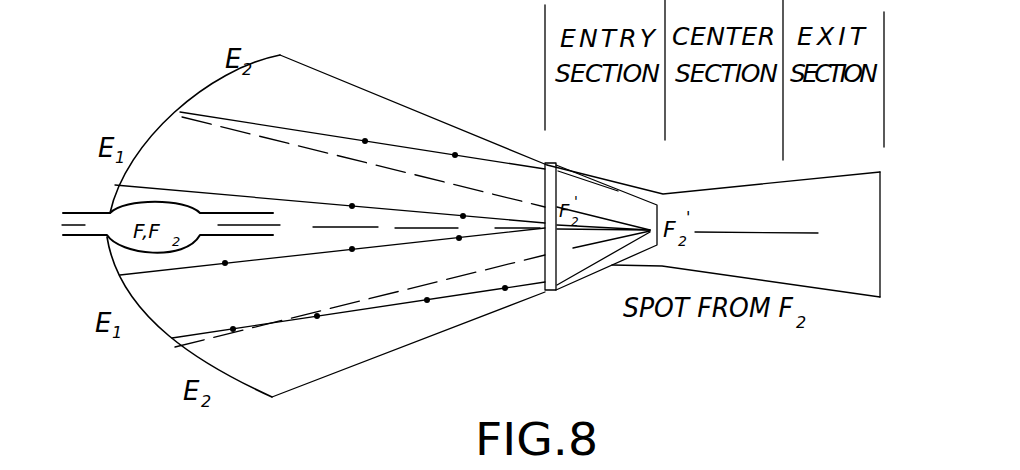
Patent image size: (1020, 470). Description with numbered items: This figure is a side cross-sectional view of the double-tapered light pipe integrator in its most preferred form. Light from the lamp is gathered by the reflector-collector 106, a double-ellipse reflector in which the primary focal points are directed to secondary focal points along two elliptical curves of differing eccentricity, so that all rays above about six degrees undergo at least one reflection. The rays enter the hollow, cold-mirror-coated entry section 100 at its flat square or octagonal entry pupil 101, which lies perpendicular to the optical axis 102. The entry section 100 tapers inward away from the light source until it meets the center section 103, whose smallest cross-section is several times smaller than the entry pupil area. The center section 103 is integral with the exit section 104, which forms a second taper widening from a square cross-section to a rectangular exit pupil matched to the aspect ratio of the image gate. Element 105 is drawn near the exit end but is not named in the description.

The entry section 100 is at (599, 176).
The entry pupil 101 is at (543, 267).
The optical axis 102 is at (765, 232).
The center section 103 is at (706, 190).
The exit section 104 is at (863, 260).
The exit face 105 is at (882, 190).
The reflector-collector 106 is at (207, 58).